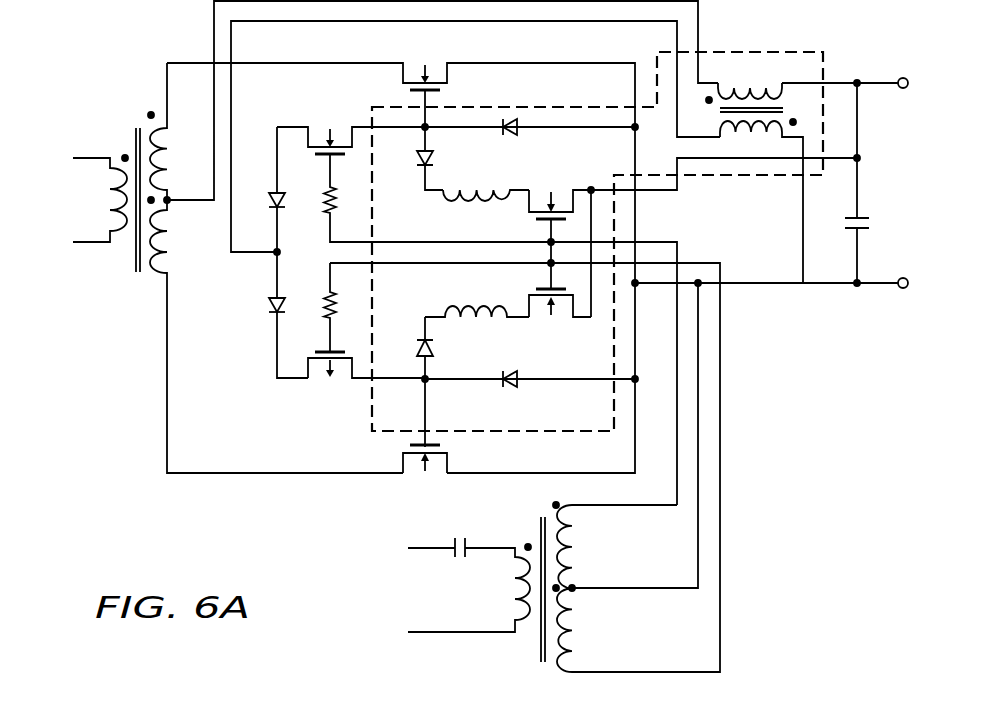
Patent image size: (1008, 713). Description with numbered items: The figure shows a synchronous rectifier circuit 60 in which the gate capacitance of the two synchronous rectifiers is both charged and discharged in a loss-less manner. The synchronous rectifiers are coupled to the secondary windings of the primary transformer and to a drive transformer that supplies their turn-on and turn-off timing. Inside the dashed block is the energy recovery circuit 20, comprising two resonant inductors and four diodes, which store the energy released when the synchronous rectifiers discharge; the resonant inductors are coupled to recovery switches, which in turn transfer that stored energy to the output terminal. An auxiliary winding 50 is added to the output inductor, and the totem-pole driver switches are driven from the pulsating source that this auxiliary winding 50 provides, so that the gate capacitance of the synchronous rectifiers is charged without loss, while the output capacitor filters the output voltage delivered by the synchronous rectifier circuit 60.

The energy recovery circuit 20 is at (583, 420).
The auxiliary winding 50 is at (802, 99).
The synchronous rectifier circuit 60 is at (221, 541).